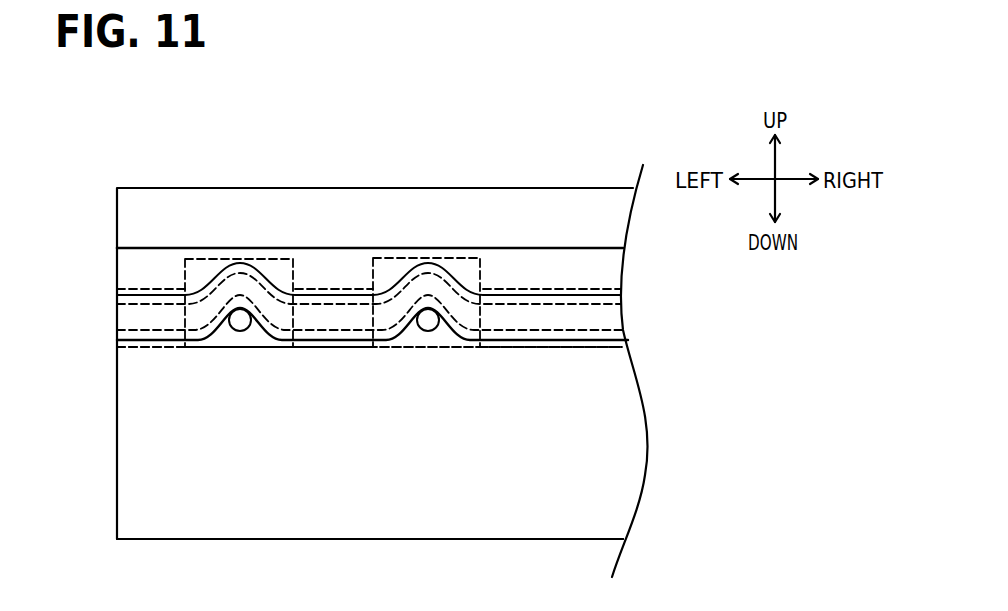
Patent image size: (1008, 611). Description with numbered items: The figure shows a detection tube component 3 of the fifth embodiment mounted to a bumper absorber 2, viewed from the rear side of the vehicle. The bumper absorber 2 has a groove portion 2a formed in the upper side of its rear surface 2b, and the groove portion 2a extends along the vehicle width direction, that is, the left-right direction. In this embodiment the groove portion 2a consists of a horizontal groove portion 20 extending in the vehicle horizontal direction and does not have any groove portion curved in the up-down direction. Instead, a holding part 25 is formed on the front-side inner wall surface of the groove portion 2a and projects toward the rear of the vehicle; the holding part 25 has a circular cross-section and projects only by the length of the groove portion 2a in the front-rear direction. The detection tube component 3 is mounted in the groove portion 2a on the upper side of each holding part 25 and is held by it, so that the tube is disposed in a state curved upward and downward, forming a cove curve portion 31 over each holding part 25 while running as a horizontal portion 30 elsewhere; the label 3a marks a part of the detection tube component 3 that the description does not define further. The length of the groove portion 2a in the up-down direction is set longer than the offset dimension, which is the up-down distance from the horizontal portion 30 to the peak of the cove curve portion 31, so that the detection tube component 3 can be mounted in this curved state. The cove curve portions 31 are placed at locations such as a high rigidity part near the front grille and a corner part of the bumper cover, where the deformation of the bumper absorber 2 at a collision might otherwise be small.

The bumper absorber 2 is at (543, 188).
The groove portion 2a is at (437, 341).
The horizontal groove portion 20 is at (600, 339).
The rear surface 2b is at (613, 493).
The detection tube component 3 is at (338, 295).
The sheet surface 3a is at (143, 313).
The holding part 25 is at (240, 331).
The horizontal portion 30 is at (155, 348).
The cove curve portion 31 is at (267, 259).